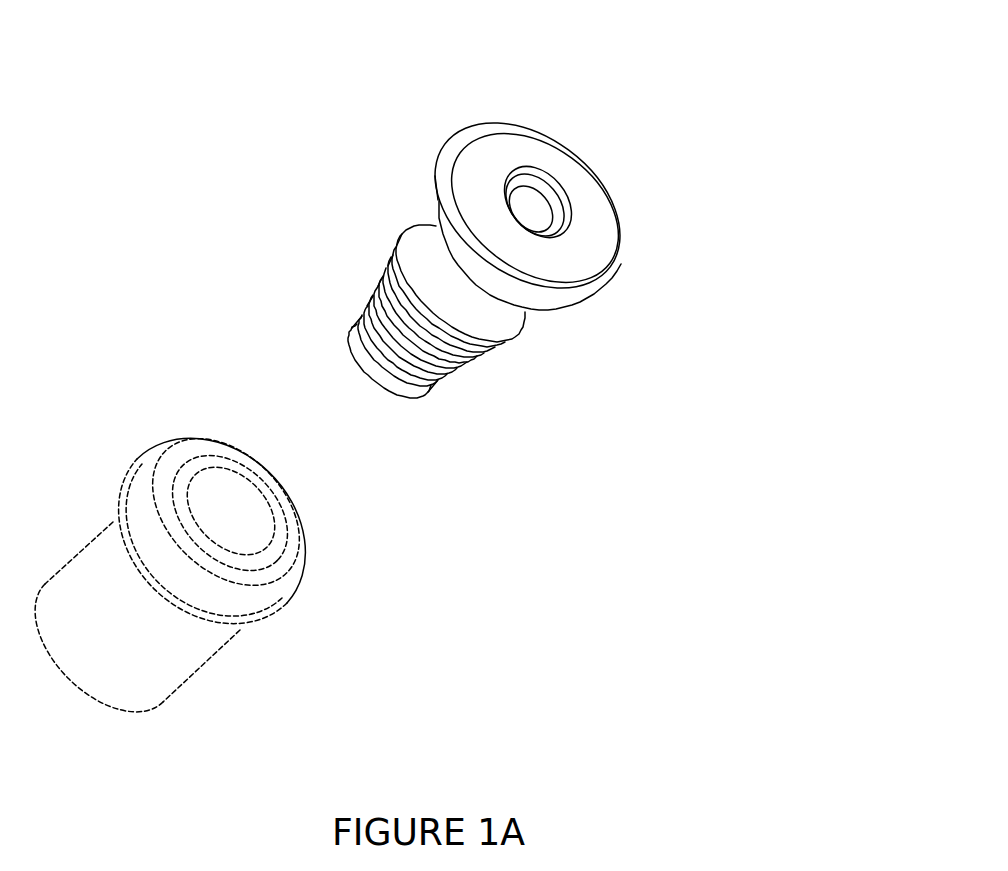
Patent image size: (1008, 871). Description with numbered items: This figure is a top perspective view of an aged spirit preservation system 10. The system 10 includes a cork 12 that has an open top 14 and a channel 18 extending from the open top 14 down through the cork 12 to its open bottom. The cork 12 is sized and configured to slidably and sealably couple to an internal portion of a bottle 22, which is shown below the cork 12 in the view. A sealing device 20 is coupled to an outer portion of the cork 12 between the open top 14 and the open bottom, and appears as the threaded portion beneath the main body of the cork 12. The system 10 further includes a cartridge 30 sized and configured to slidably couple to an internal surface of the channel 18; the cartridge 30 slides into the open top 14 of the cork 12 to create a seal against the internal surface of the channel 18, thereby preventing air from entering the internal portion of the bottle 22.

The aged spirit preservation system 10 is at (565, 423).
The cork 12 is at (558, 296).
The open top 14 is at (572, 198).
The channel 18 is at (547, 195).
The sealing device 20 is at (393, 283).
The bottle 22 is at (356, 583).
The cartridge 30 is at (530, 207).